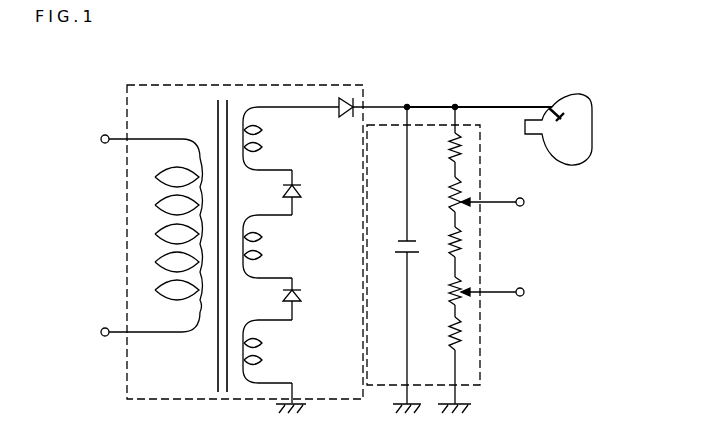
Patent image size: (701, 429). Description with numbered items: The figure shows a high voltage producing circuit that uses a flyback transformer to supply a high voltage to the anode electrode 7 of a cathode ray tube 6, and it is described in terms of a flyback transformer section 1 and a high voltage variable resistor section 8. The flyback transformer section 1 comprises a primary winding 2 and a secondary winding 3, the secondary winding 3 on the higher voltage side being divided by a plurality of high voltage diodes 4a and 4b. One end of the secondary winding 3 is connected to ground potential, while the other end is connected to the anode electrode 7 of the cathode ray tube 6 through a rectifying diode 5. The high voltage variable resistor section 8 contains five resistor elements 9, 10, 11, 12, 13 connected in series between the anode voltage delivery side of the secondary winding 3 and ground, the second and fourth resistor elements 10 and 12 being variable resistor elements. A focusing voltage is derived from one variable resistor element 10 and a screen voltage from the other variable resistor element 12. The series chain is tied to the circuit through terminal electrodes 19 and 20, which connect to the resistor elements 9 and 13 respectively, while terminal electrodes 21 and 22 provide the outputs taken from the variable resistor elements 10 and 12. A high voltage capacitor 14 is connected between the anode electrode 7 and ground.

The flyback transformer section 1 is at (190, 79).
The primary winding 2 is at (140, 241).
The secondary winding 3 is at (270, 90).
The high voltage diode 4a is at (302, 185).
The high voltage diode 4b is at (302, 290).
The rectifying diode 5 is at (363, 86).
The cathode ray tube 6 is at (580, 93).
The anode electrode 7 is at (562, 112).
The high voltage variable resistor section 8 is at (441, 255).
The resistor element 9 is at (465, 152).
The variable resistor element 10 is at (463, 190).
The resistor element 11 is at (465, 245).
The variable resistor element 12 is at (462, 284).
The resistor element 13 is at (467, 334).
The high voltage capacitor 14 is at (397, 236).
The terminal electrode 19 is at (475, 106).
The terminal electrode 20 is at (458, 396).
The terminal electrode 21 is at (525, 202).
The terminal electrode 22 is at (525, 292).